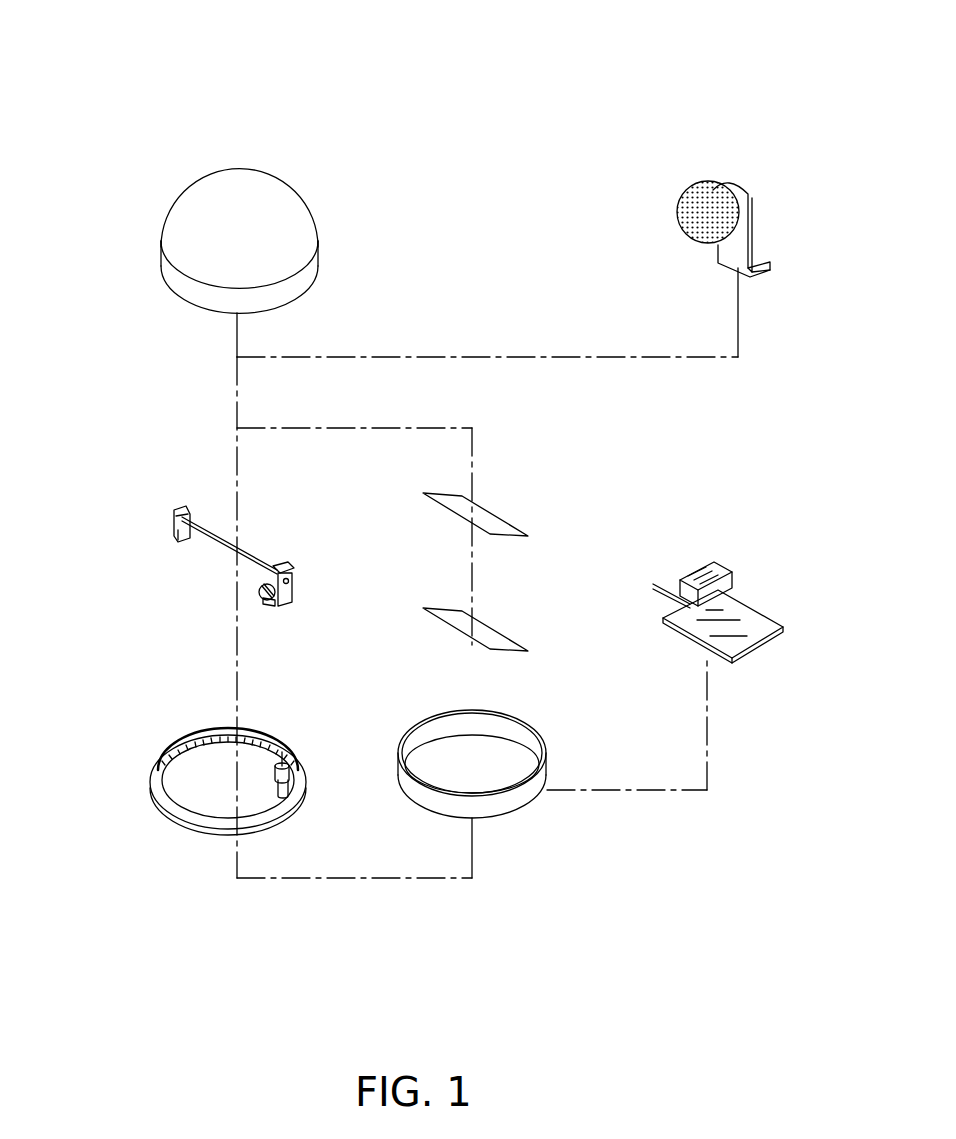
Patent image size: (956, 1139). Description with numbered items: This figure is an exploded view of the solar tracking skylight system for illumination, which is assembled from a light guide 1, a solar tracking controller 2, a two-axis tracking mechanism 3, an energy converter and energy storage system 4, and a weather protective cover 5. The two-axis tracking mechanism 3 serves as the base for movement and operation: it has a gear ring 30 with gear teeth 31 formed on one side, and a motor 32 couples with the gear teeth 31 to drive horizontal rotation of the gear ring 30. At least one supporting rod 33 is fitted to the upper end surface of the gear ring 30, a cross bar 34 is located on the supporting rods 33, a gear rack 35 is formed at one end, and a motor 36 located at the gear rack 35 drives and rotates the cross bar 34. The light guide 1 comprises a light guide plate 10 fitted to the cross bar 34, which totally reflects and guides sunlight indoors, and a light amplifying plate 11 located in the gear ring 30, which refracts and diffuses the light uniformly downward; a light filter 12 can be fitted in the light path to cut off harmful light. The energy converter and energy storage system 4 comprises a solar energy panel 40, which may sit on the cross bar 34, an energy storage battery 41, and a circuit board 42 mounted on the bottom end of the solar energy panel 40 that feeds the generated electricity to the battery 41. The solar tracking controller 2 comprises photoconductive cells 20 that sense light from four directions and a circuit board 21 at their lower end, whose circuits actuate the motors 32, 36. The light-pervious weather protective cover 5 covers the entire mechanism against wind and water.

The light guide 1 is at (527, 315).
The solar tracking controller 2 is at (757, 140).
The two-axis tracking mechanism 3 is at (145, 700).
The energy converter and energy storage system 4 is at (758, 592).
The weather protective cover 5 is at (165, 252).
The light guide plate 10 is at (505, 525).
The light amplifying plate 11 is at (520, 813).
The light filter 12 is at (505, 640).
The photoconductive cells (photoresistors) 20 is at (708, 212).
The circuit board 21 is at (740, 195).
The gear ring 30 is at (177, 822).
The gear teeth 31 is at (203, 752).
The motor 32 is at (285, 790).
The supporting rod 33 is at (178, 540).
The cross bar 34 is at (230, 547).
The gear rack 35 is at (265, 576).
The motor 36 is at (265, 617).
The solar energy panel 40 is at (757, 628).
The energy storage battery 41 is at (705, 560).
The circuit board 42 is at (705, 645).